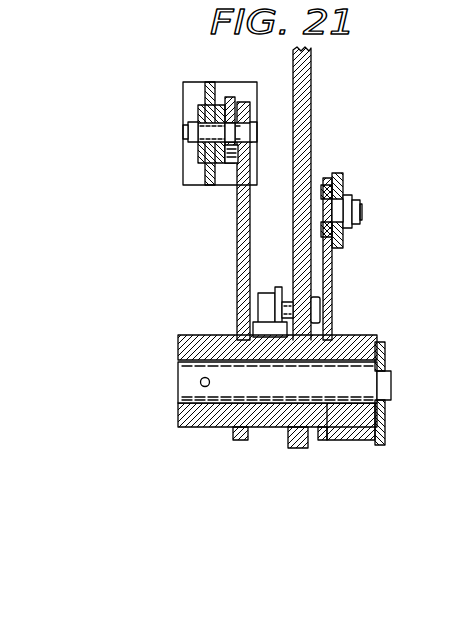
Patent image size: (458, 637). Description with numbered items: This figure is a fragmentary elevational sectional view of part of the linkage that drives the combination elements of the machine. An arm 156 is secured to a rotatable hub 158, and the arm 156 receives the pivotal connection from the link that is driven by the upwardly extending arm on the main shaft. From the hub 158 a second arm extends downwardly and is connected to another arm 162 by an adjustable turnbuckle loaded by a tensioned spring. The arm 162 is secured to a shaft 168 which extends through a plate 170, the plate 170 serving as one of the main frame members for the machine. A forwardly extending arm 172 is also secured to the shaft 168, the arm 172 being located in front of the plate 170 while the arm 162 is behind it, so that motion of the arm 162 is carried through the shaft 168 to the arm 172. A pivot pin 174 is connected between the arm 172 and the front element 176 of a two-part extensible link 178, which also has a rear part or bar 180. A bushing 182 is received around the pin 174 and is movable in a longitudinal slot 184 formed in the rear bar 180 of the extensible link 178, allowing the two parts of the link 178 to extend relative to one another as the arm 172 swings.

The arm 156 is at (333, 272).
The rotatable hub 158 is at (355, 334).
The arm 162 is at (385, 432).
The shaft 168 is at (185, 383).
The plate 170 is at (312, 112).
The forwardly extending arm 172 is at (240, 211).
The pivot pin 174 is at (188, 130).
The front element 176 is at (205, 90).
The two-part extensible link 178 is at (233, 56).
The rear bar 180 is at (224, 88).
The bushing 182 is at (200, 156).
The longitudinal slot 184 is at (227, 149).